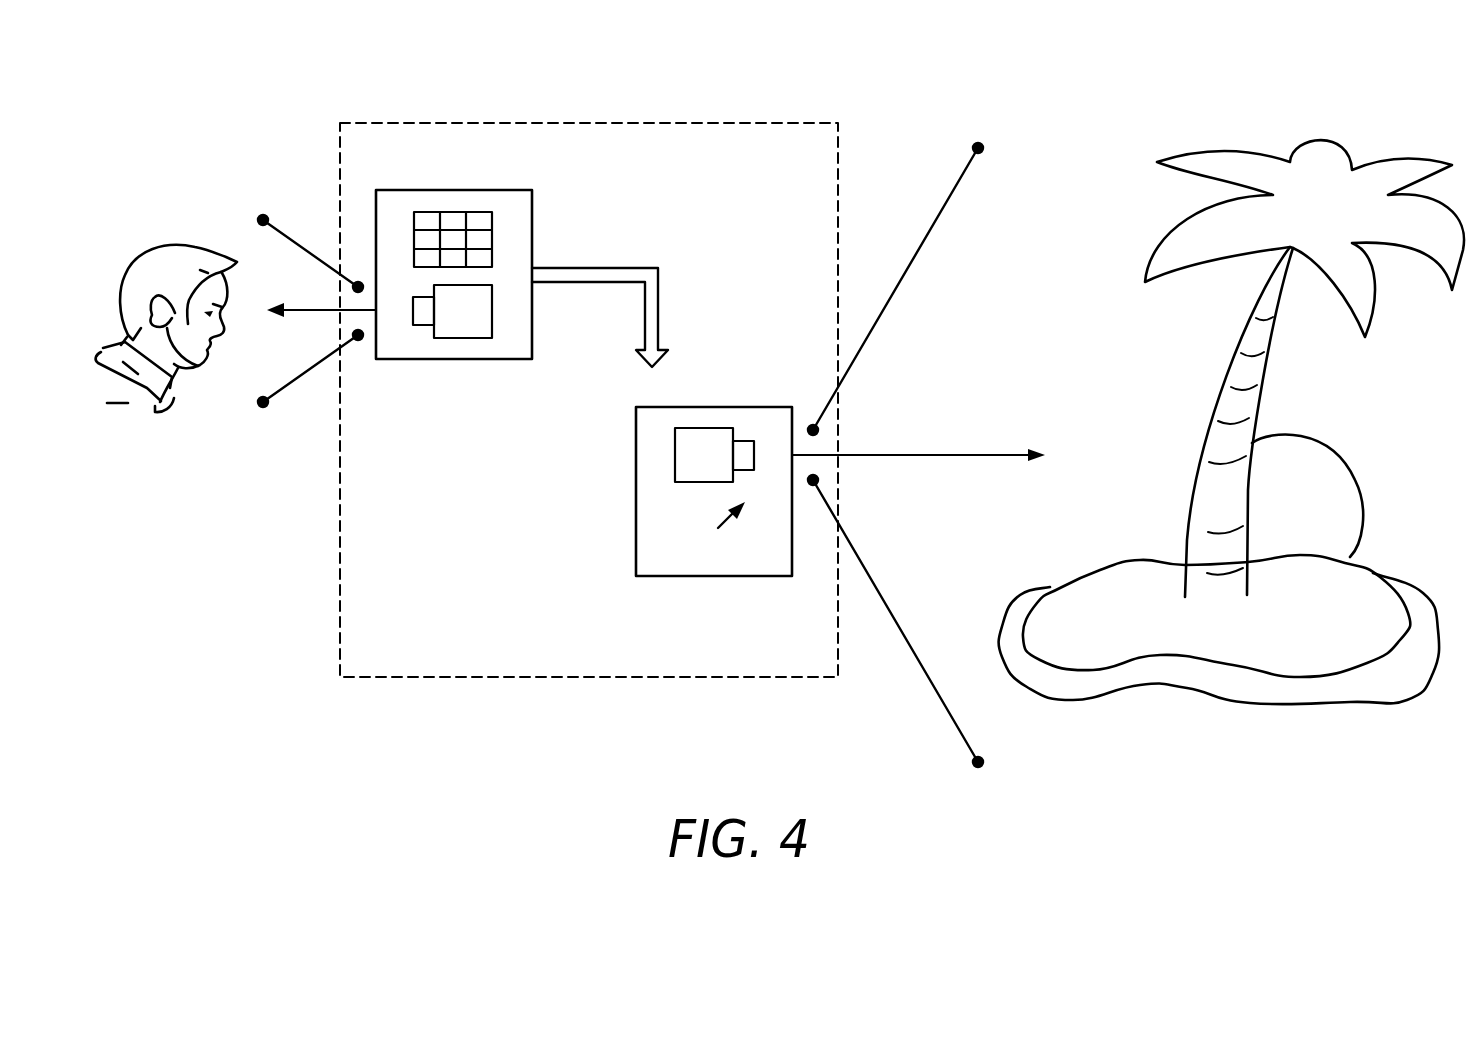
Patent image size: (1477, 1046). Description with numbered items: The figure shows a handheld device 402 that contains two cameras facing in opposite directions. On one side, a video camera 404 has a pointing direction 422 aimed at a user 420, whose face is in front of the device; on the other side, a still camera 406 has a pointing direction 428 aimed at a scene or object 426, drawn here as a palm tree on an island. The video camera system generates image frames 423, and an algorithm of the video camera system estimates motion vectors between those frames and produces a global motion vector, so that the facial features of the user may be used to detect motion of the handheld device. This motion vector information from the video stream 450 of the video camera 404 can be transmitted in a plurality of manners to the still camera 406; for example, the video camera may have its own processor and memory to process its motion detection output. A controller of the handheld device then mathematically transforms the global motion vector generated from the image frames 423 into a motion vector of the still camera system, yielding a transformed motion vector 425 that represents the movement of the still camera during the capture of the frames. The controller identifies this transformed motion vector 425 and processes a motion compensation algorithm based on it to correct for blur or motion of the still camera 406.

The handheld device 402 is at (360, 122).
The video camera 404 is at (514, 190).
The still camera 406 is at (652, 407).
The user 420 is at (177, 243).
The pointing direction 422 is at (290, 312).
The image frames 423 is at (453, 212).
The transformed motion vector 425 is at (718, 528).
The scene or object 426 is at (1237, 145).
The pointing direction 428 is at (905, 453).
The motion vector information from the video stream 450 is at (762, 190).